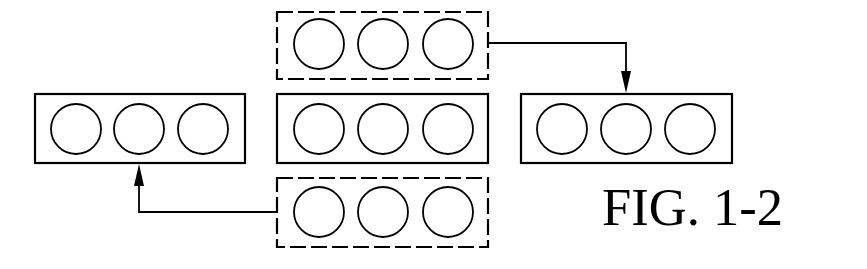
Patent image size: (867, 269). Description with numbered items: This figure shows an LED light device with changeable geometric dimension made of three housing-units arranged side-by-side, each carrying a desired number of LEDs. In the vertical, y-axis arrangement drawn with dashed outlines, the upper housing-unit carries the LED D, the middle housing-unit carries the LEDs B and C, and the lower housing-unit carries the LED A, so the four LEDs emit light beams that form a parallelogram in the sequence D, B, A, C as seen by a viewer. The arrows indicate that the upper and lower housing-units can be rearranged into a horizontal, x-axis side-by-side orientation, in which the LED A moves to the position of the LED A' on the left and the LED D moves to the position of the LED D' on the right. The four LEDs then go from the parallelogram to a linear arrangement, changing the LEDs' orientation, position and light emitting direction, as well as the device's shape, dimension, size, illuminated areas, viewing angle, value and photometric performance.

The LED A is at (383, 212).
The LED B is at (319, 129).
The LED C is at (448, 129).
The LED D is at (383, 44).
The LED (repositioned) A' is at (139, 129).
The LED (repositioned) D' is at (626, 129).